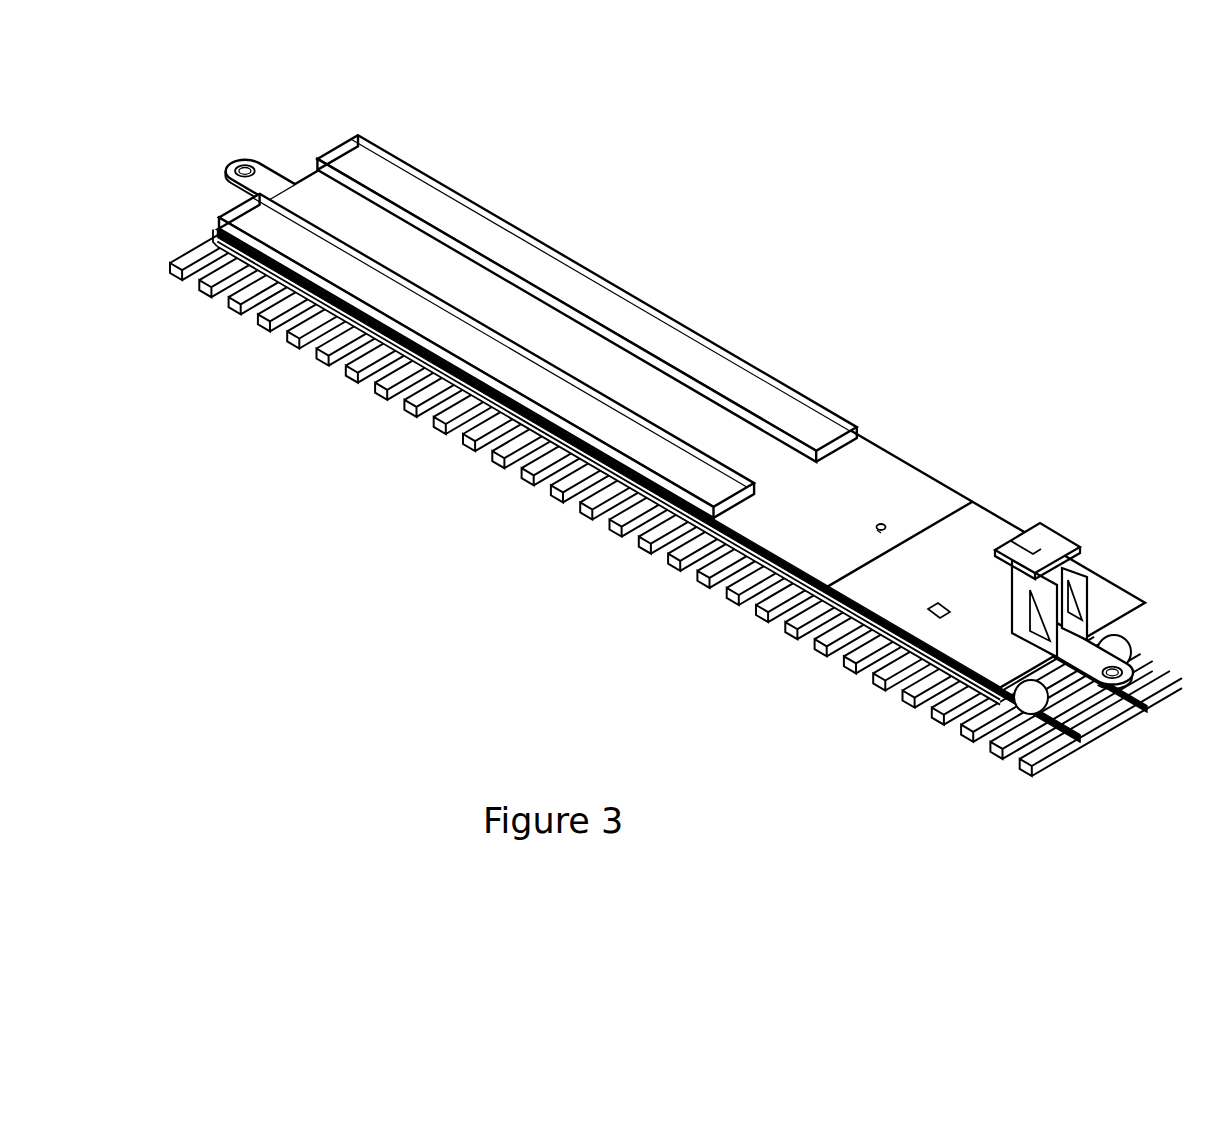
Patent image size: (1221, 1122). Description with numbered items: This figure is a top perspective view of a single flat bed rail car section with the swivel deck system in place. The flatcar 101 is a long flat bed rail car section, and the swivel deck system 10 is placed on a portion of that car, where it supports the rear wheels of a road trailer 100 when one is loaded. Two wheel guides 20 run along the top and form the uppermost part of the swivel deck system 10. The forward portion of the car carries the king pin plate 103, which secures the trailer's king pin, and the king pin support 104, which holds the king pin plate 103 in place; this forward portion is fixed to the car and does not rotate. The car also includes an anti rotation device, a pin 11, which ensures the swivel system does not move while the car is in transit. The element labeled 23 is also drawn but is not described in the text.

The swivel deck system 10 is at (875, 436).
The anti rotation device (pin) 11 is at (887, 520).
The wheel guides 20 is at (585, 413).
The platform 23 is at (926, 507).
The road trailer 100 is at (538, 321).
The flatcar 101 is at (908, 617).
The king pin plate 103 is at (1053, 538).
The king pin support 104 is at (1077, 583).